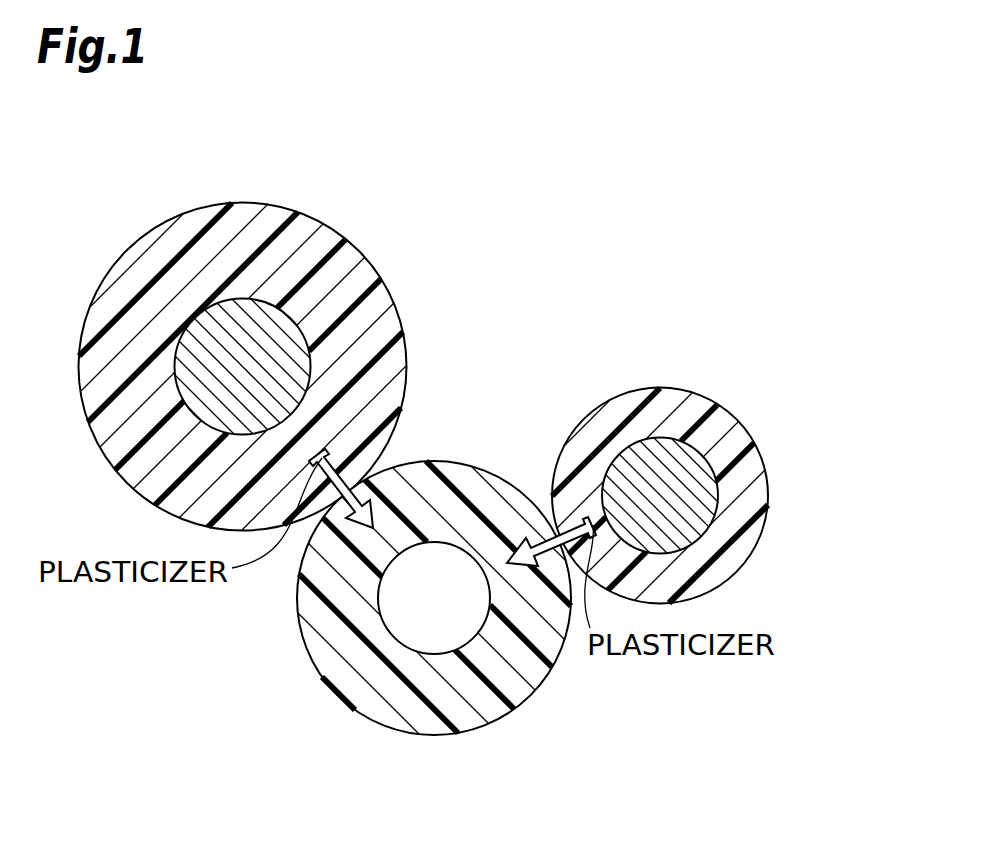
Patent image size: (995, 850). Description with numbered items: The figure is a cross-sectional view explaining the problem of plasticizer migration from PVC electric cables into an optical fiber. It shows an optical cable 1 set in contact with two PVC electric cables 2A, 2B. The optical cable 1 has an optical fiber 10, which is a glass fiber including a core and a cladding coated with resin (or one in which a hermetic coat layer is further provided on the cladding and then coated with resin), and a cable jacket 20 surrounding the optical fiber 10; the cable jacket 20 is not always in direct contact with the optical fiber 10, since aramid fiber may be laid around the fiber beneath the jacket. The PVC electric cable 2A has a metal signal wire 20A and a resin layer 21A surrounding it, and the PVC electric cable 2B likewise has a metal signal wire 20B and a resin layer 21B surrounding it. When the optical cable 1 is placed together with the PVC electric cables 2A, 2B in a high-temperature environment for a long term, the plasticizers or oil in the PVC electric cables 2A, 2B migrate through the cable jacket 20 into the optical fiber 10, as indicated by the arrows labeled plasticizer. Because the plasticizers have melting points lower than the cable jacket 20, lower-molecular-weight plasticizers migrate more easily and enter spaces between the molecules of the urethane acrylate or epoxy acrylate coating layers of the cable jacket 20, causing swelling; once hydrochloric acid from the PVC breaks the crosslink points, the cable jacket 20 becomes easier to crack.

The optical cable 1 is at (427, 632).
The optical fiber 10 is at (433, 613).
The cable jacket 20 is at (367, 677).
The PVC electric cable 2A is at (291, 338).
The metal signal wire 20A is at (277, 342).
The resin layer 21A is at (377, 403).
The PVC electric cable 2B is at (706, 465).
The metal signal wire 20B is at (683, 498).
The resin layer 21B is at (723, 553).